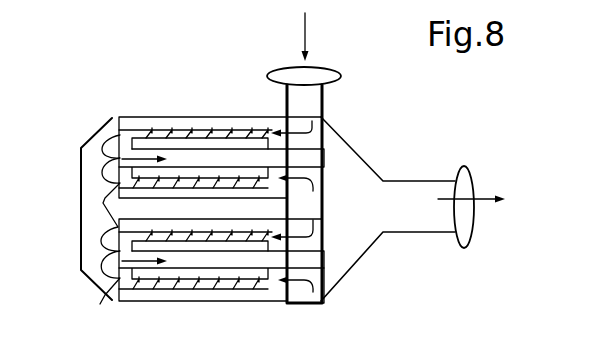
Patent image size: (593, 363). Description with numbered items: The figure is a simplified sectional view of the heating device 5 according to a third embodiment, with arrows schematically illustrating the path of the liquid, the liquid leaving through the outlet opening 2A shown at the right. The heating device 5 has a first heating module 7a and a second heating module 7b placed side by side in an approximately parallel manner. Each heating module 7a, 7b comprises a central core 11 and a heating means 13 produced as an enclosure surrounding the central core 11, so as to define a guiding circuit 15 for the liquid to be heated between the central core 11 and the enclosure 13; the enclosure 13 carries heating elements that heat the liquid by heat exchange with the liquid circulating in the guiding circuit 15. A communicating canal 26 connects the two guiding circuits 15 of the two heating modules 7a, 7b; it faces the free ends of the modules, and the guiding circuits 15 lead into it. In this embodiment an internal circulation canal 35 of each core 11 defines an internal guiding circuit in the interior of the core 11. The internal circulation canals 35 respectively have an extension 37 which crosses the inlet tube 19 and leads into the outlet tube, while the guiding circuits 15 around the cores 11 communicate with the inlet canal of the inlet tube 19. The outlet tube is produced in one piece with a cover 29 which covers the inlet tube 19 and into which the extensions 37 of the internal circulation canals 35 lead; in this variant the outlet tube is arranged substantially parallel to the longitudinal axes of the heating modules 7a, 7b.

The first heating module 7a is at (188, 119).
The second heating module 7b is at (176, 285).
The communicating canal 26 is at (88, 207).
The heating means 13 is at (197, 124).
The guiding circuit 15 is at (139, 130).
The central core 11 is at (242, 142).
The inlet tube 19 is at (307, 98).
The internal circulation canal 35 is at (222, 262).
The extension 37 is at (336, 270).
The cover 29 is at (357, 242).
The heating device 5 is at (413, 209).
The outlet opening 2A is at (430, 220).